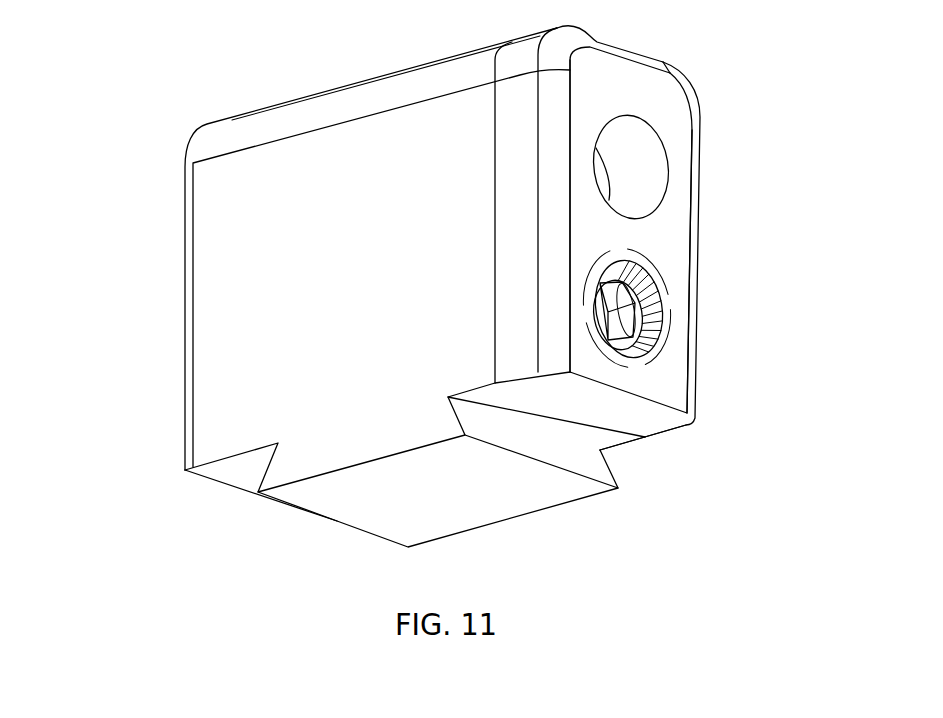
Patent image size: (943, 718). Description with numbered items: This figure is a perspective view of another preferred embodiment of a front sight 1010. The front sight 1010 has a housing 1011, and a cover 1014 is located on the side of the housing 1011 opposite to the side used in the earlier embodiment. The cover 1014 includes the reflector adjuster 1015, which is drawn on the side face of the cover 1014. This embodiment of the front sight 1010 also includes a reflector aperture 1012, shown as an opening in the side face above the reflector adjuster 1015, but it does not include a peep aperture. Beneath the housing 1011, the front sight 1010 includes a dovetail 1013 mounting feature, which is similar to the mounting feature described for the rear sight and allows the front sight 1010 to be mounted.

The front sight 1010 is at (95, 68).
The housing 1011 is at (270, 305).
The reflector aperture 1012 is at (644, 163).
The dovetail 1013 is at (350, 445).
The cover 1014 is at (665, 244).
The reflector adjuster 1015 is at (620, 325).